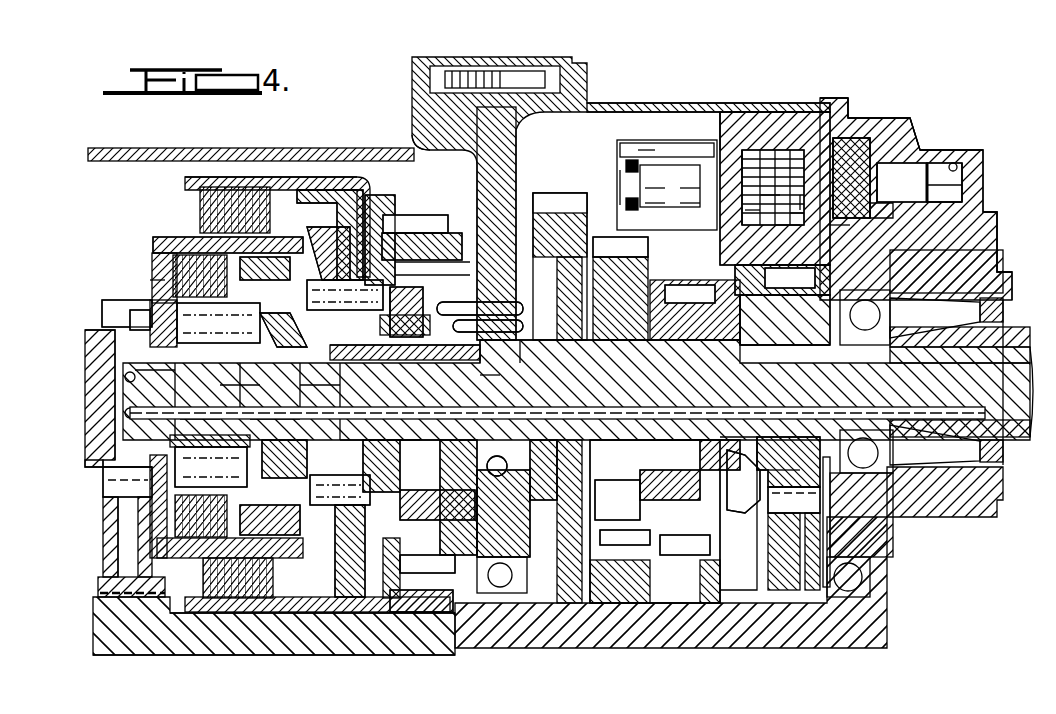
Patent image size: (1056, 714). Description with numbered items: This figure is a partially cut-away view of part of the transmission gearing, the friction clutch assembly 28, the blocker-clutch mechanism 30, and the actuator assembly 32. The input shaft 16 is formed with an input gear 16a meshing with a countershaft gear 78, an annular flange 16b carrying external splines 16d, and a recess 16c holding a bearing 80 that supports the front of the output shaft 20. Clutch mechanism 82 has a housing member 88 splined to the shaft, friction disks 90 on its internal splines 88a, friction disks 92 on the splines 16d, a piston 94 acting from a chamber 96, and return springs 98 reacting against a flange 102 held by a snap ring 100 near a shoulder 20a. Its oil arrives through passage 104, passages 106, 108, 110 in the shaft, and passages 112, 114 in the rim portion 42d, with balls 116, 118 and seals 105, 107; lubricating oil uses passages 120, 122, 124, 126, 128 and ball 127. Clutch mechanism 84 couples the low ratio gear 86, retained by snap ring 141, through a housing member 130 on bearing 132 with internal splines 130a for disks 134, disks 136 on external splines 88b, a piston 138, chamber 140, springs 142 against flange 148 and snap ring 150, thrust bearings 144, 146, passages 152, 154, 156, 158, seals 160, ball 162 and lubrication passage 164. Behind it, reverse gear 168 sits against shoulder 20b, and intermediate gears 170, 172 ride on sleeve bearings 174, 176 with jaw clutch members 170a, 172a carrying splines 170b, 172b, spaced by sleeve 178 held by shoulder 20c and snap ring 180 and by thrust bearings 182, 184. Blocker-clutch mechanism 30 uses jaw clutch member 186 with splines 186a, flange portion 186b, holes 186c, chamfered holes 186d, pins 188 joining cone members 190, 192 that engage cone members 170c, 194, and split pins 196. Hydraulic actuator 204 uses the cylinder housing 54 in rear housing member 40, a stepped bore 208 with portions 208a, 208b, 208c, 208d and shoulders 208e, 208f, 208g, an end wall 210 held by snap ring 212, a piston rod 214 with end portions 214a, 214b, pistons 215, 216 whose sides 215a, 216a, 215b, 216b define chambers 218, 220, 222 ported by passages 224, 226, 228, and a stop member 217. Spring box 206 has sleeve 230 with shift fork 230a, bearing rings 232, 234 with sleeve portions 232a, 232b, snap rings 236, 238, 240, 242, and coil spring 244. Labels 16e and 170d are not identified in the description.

The input shaft 16 is at (102, 326).
The input gear 16a is at (150, 281).
The annular flange 16b is at (110, 352).
The recess 16c is at (110, 422).
The external splines 16d is at (148, 497).
The housing wall 16e is at (368, 460).
The output shaft 20 is at (1012, 441).
The shoulder 20a is at (265, 412).
The shoulder 20b is at (592, 350).
The shoulder 20c is at (670, 445).
The friction clutch assembly 28 is at (259, 168).
The blocker-clutch mechanism 30 is at (744, 560).
The actuator assembly 32 is at (676, 100).
The rear housing member 40 is at (1000, 230).
The annular rim portion 42d is at (486, 500).
The cylinder housing 54 is at (794, 140).
The countershaft gear 78 is at (104, 520).
The bearing 80 is at (136, 456).
The clutch mechanism 82 is at (150, 245).
The clutch mechanism 84 is at (186, 197).
The low or first speed ratio gear 86 is at (437, 215).
The housing member 88 is at (178, 228).
The internal splines 88a is at (162, 262).
The external splines 88b is at (300, 535).
The friction disks 90 is at (158, 310).
The friction disks 92 is at (182, 590).
The piston 94 is at (304, 252).
The chamber 96 is at (312, 280).
The return springs 98 is at (262, 281).
The snap ring 100 is at (185, 372).
The radially extending flange 102 is at (222, 330).
The passage 104 is at (240, 375).
The seals 105 is at (316, 385).
The passage 106 is at (320, 375).
The seals 107 is at (520, 352).
The passage 108 is at (258, 385).
The passage 110 is at (445, 338).
The passage 112 is at (488, 378).
The passage 114 is at (482, 332).
The interference fit ball 116 is at (165, 368).
The interference fit ball 118 is at (538, 336).
The passage 120 is at (446, 452).
The passage 122 is at (520, 415).
The passage 124 is at (420, 441).
The passage 126 is at (192, 408).
The interference fit ball 127 is at (147, 395).
The passages 128 is at (222, 450).
The housing member 130 is at (342, 180).
The internal splines 130a is at (297, 614).
The bearing 132 is at (390, 440).
The friction disks 134 is at (230, 614).
The disks 136 is at (336, 536).
The piston 138 is at (380, 172).
The chamber 140 is at (380, 205).
The snap ring 141 is at (421, 596).
The return springs 142 is at (437, 505).
The thrust bearing 144 is at (330, 350).
The thrust bearing 146 is at (375, 350).
The radially extending flange 148 is at (340, 490).
The snap ring 150 is at (300, 445).
The passage 152 is at (415, 224).
The passage 154 is at (472, 263).
The passage 156 is at (472, 276).
The passage 158 is at (470, 292).
The seals 160 is at (395, 312).
The interference fit ball 162 is at (466, 250).
The passage 164 is at (350, 407).
The reverse speed ratio gear 168 is at (478, 215).
The first intermediate speed ratio gear 170 is at (560, 265).
The jaw clutch member 170a is at (640, 370).
The external jaw clutch splines 170b is at (680, 343).
The friction cone-clutch member 170c is at (625, 538).
The sleeve portion 170d is at (427, 564).
The second intermediate speed ratio gear 172 is at (860, 292).
The jaw clutch member 172a is at (790, 355).
The external jaw clutch splines 172b is at (742, 346).
The sleeve bearing 174 is at (640, 345).
The sleeve bearing 176 is at (812, 345).
The sleeve 178 is at (720, 345).
The snap ring 180 is at (716, 445).
The thrust bearing 182 is at (545, 446).
The thrust bearing 184 is at (845, 430).
The jaw clutch member 186 is at (600, 456).
The internal jaw clutch splines 186a is at (788, 462).
The flange portion 186b is at (685, 545).
The holes 186c is at (690, 294).
The chamfered holes 186d is at (756, 513).
The pins 188 is at (620, 246).
The friction cone-clutch member 190 is at (626, 496).
The friction cone-clutch member 192 is at (765, 462).
The friction cone-clutch member 194 is at (794, 500).
The split pins 196 is at (682, 510).
The hydraulic actuator 204 is at (855, 107).
The spring box 206 is at (630, 140).
The stepped bore 208 is at (737, 160).
The cylindrical bore portion 208a is at (725, 120).
The cylindrical bore portion 208b is at (765, 130).
The cylindrical bore portion 208c is at (855, 130).
The cylindrical bore portion 208d is at (963, 165).
The shoulder 208e is at (790, 278).
The shoulder 208f is at (880, 220).
The shoulder 208g is at (910, 214).
The end wall 210 is at (766, 184).
The snap ring 212 is at (743, 199).
The piston rod 214 is at (800, 150).
The end portion 214a is at (945, 185).
The end portion 214b is at (620, 178).
The piston 215 is at (940, 208).
The facing side 215a is at (789, 200).
The distal side 215b is at (902, 182).
The piston 216 is at (852, 238).
The facing side 216a is at (796, 191).
The distal side 216b is at (777, 226).
The stop member 217 is at (851, 178).
The first fluid chamber 218 is at (860, 118).
The second fluid chamber 220 is at (780, 130).
The third fluid chamber 222 is at (935, 150).
The passage 224 is at (770, 130).
The passage 226 is at (837, 98).
The passage 228 is at (905, 135).
The sleeve 230 is at (655, 150).
The shift fork 230a is at (782, 286).
The annular bearing ring 232 is at (625, 163).
The sleeve portion 232a is at (642, 138).
The sleeve portion 232b is at (630, 212).
The annular bearing ring 234 is at (728, 169).
The snap ring 236 is at (640, 150).
The snap ring 238 is at (655, 177).
The snap ring 240 is at (688, 192).
The snap ring 242 is at (690, 177).
The pre-loaded coil spring 244 is at (650, 192).